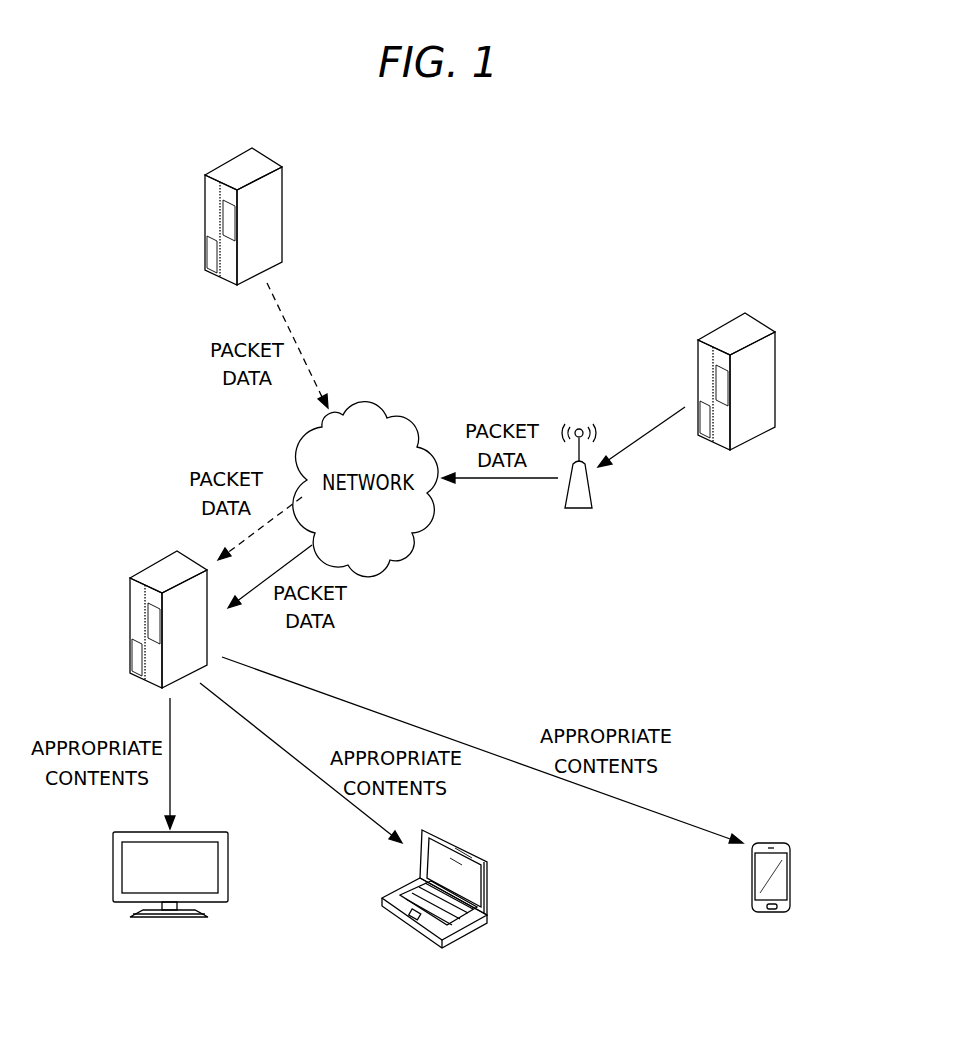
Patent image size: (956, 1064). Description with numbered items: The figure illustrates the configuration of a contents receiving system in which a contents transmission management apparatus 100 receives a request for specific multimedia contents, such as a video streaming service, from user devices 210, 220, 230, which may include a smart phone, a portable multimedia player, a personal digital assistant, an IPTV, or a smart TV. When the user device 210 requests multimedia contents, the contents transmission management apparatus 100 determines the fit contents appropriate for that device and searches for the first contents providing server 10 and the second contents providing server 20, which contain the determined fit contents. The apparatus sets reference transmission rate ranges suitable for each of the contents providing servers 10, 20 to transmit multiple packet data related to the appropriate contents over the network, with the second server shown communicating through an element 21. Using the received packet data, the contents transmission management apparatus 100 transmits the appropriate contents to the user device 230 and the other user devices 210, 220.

The first contents providing server 10 is at (267, 153).
The second contents providing server 20 is at (762, 322).
The access point / base station 21 is at (592, 488).
The contents transmission management apparatus 100 is at (157, 562).
The user device 210 is at (228, 843).
The user device 220 is at (492, 877).
The user device 230 is at (790, 860).